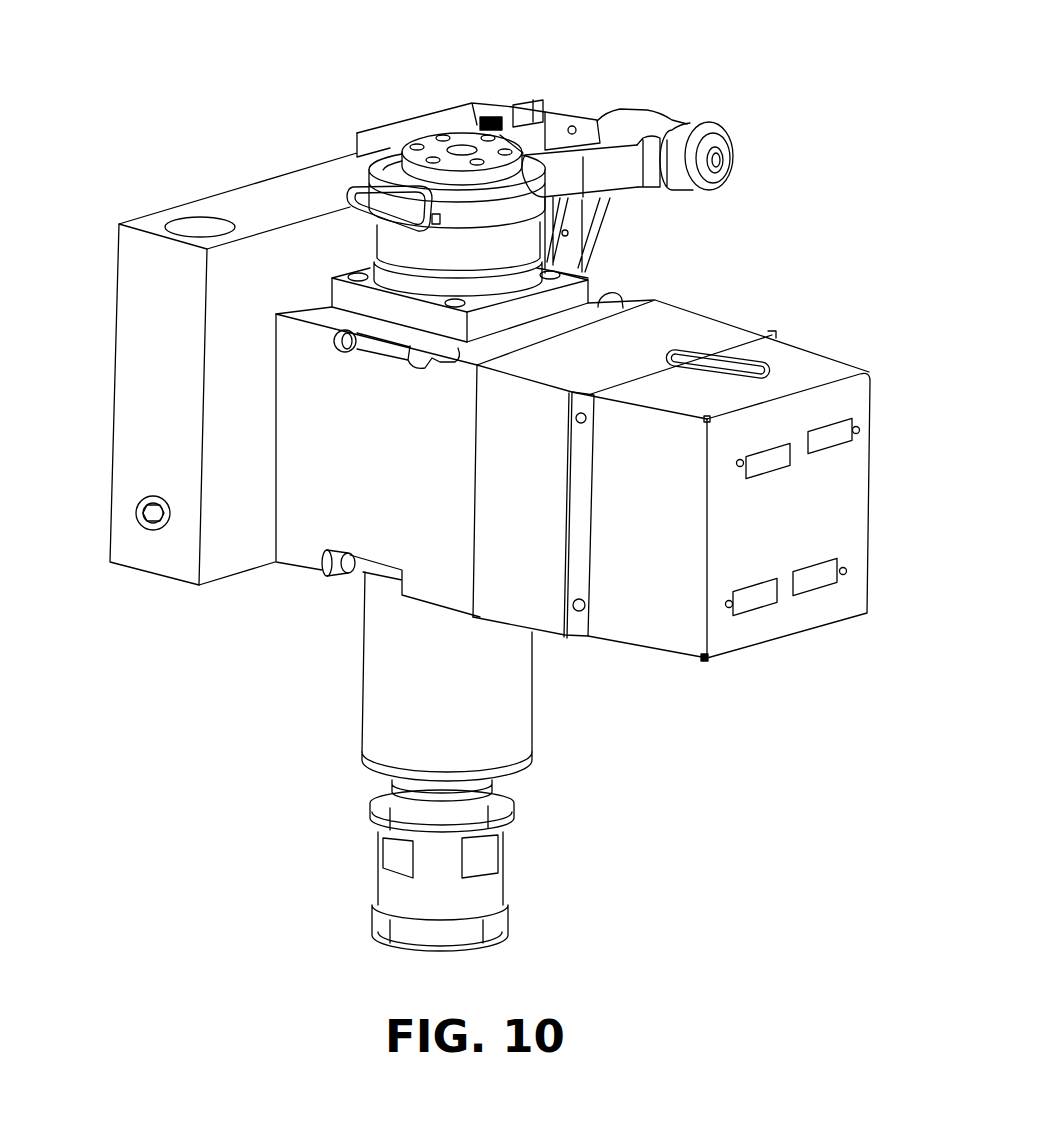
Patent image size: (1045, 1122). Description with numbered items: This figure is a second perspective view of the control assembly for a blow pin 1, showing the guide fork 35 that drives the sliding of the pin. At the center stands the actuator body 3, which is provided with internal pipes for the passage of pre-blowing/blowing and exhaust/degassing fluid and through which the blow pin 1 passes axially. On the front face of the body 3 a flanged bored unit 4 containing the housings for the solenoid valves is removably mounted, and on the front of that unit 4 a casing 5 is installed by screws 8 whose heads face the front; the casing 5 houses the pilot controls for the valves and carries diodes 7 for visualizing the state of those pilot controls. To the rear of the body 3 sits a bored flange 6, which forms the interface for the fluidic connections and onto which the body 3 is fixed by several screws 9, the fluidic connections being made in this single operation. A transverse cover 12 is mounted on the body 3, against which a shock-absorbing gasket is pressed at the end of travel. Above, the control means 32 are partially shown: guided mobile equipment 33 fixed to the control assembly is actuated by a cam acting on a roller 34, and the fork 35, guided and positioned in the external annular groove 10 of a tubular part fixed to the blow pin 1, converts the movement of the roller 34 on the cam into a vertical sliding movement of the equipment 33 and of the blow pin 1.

The blow pin 1 is at (498, 887).
The body 3 is at (303, 553).
The unit 4 is at (717, 330).
The casing 5 is at (797, 362).
The bored flange 6 is at (135, 312).
The diodes 7 is at (860, 427).
The screws 8 is at (583, 610).
The screws 9 is at (340, 350).
The external annular groove 10 is at (465, 223).
The transverse cover 12 is at (340, 297).
The control means 32 is at (652, 105).
The guided equipment 33 is at (553, 130).
The roller 34 is at (700, 123).
The fork 35 is at (372, 192).